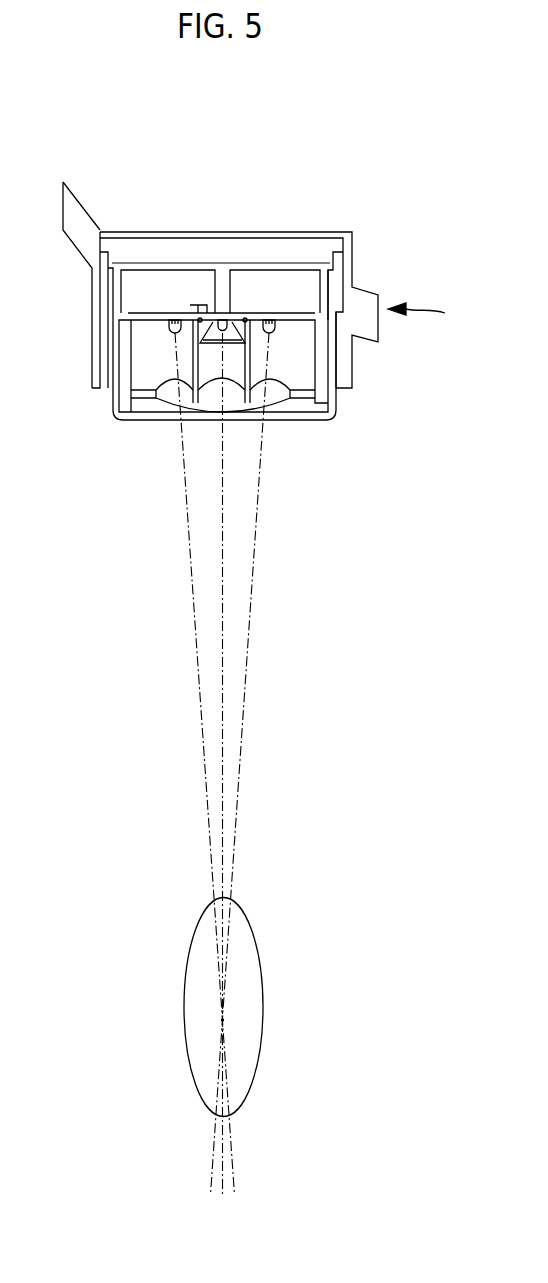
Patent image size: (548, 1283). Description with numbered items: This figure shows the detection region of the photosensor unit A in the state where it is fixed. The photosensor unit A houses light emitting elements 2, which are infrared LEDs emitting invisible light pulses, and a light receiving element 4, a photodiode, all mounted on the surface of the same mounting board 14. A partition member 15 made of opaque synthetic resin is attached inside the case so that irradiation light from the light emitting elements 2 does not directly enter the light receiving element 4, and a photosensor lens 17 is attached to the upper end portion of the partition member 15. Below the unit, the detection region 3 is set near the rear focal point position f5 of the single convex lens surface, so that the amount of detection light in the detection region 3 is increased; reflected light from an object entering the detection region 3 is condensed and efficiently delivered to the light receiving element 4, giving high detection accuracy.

The mounting board 14 is at (148, 313).
The light receiving element 4 is at (238, 318).
The light emitting elements 2 is at (277, 328).
The partition member 15 is at (323, 367).
The photosensor lens 17 is at (277, 396).
The photosensor unit A is at (428, 313).
The detection region 3 is at (250, 1058).
The rear focal point position f5 is at (223, 1023).